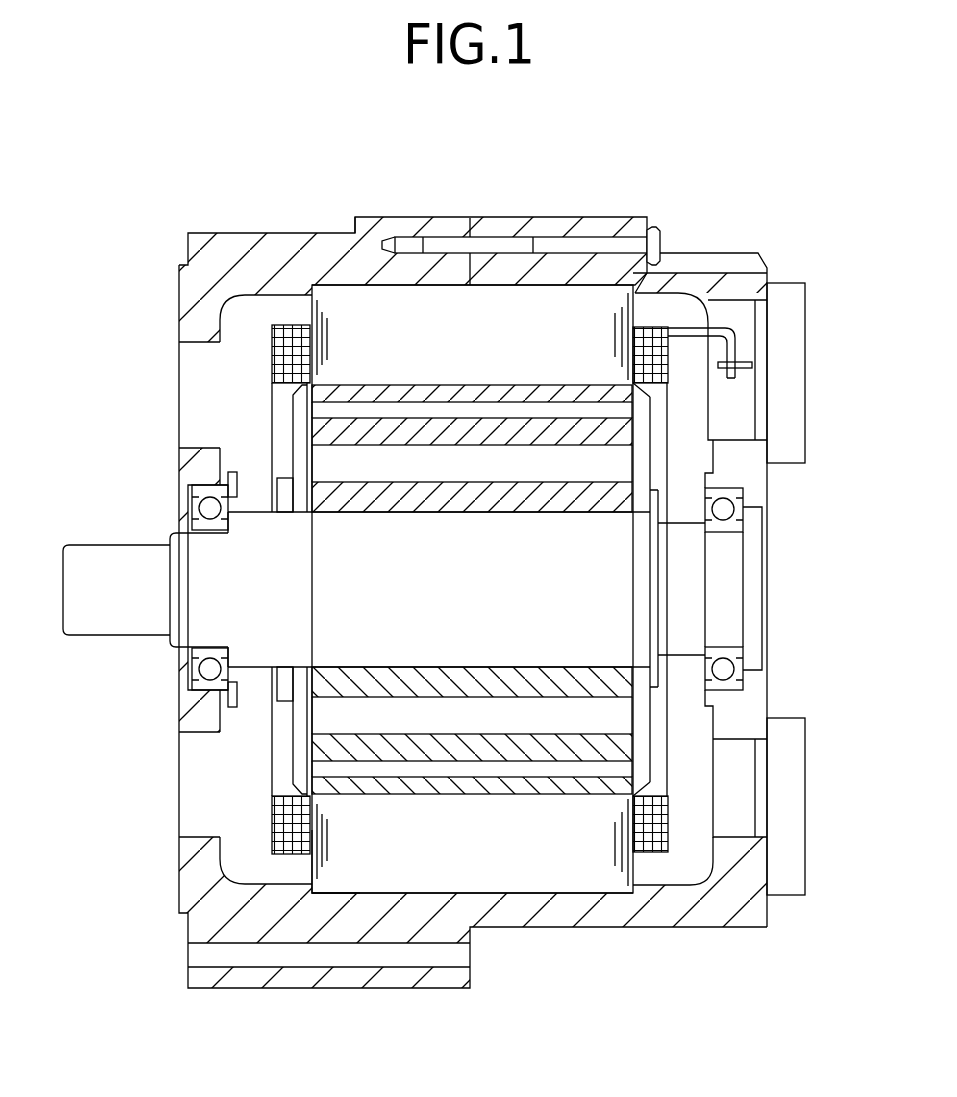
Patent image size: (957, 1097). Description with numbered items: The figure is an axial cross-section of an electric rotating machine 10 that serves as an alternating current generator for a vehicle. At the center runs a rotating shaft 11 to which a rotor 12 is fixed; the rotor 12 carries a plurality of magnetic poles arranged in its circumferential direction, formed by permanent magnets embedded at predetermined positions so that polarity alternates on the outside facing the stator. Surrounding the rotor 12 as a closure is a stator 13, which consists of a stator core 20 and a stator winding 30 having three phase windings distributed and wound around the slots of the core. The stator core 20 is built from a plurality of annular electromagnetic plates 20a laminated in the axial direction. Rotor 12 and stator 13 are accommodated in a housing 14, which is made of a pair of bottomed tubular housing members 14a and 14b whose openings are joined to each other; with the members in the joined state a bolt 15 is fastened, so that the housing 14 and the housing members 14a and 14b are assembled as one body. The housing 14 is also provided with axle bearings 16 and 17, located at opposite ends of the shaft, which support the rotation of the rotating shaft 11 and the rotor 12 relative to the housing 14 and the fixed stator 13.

The electric rotating machine 10 is at (770, 180).
The rotating shaft 11 is at (115, 622).
The rotor 12 is at (607, 430).
The stator 13 is at (647, 993).
The housing 14 is at (403, 148).
The housing member 14a is at (413, 225).
The housing member 14b is at (503, 225).
The bolt 15 is at (613, 245).
The axle bearing 16 is at (188, 484).
The axle bearing 17 is at (735, 504).
The stator core 20 is at (560, 883).
The electromagnetic plate 20a is at (328, 852).
The stator winding 30 is at (652, 855).